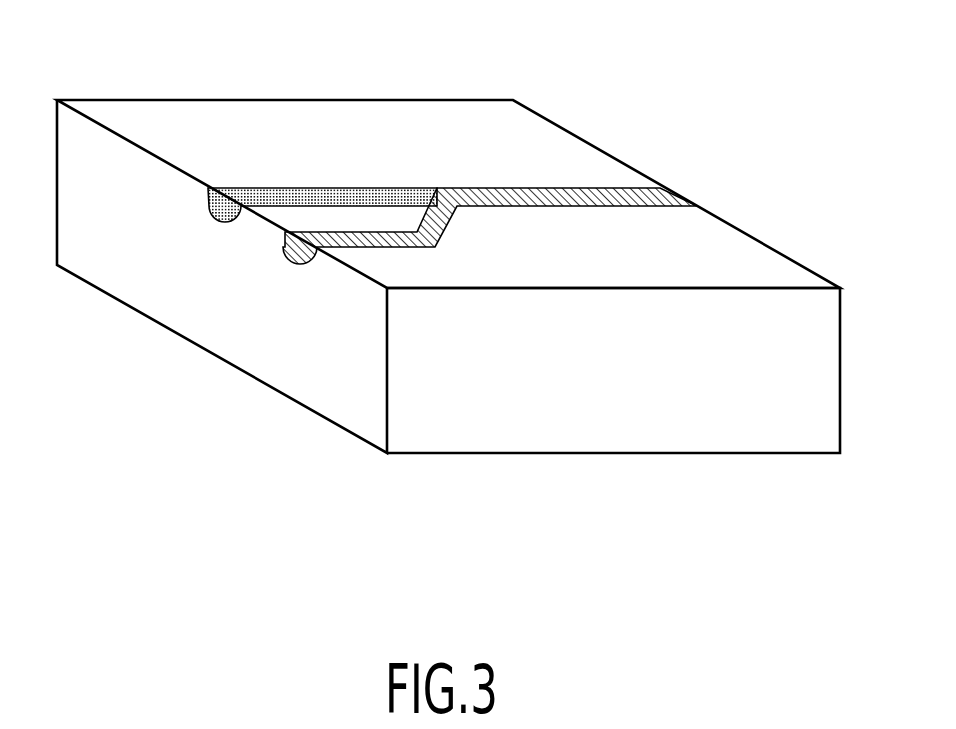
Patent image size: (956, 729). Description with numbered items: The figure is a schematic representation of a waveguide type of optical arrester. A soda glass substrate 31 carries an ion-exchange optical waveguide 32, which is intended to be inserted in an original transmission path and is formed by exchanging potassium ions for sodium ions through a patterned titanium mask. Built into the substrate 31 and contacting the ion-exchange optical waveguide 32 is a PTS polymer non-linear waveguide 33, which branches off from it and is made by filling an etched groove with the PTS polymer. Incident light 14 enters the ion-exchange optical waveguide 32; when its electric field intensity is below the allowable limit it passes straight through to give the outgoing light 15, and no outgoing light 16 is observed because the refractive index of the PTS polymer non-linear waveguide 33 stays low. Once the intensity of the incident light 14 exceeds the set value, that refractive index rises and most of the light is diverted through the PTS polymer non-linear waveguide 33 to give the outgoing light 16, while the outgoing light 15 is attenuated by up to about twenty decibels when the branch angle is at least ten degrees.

The incident light 14 is at (720, 198).
The outgoing light 15 is at (273, 248).
The outgoing light 16 is at (208, 210).
The soda glass substrate 31 is at (623, 418).
The ion-exchange optical waveguide 32 is at (373, 249).
The PTS polymer non-linear waveguide 33 is at (352, 193).